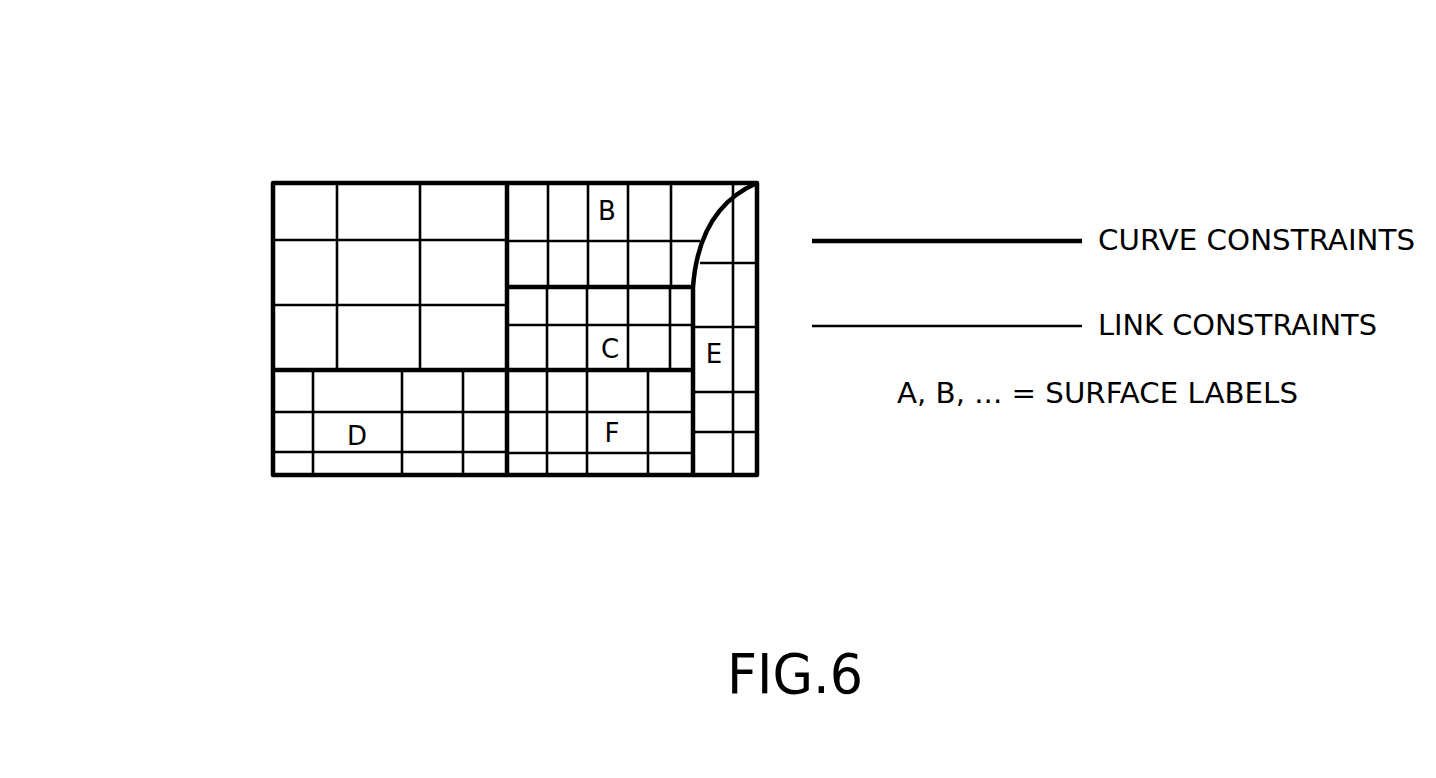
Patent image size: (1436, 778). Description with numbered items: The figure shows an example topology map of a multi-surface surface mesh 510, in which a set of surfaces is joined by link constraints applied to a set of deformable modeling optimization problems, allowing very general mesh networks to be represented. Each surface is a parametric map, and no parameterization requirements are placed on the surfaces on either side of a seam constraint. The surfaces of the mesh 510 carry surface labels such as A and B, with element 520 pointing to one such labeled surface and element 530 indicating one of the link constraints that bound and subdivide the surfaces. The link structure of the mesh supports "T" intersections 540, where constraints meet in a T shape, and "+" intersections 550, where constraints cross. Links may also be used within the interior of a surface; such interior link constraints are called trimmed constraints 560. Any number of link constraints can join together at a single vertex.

The multi-surface surface mesh 510 is at (273, 202).
The surface label A 520 is at (355, 265).
The link constraint 530 is at (357, 372).
The "T" intersection 540 is at (507, 287).
The "+" intersection 550 is at (502, 372).
The trimmed constraint 560 is at (713, 226).